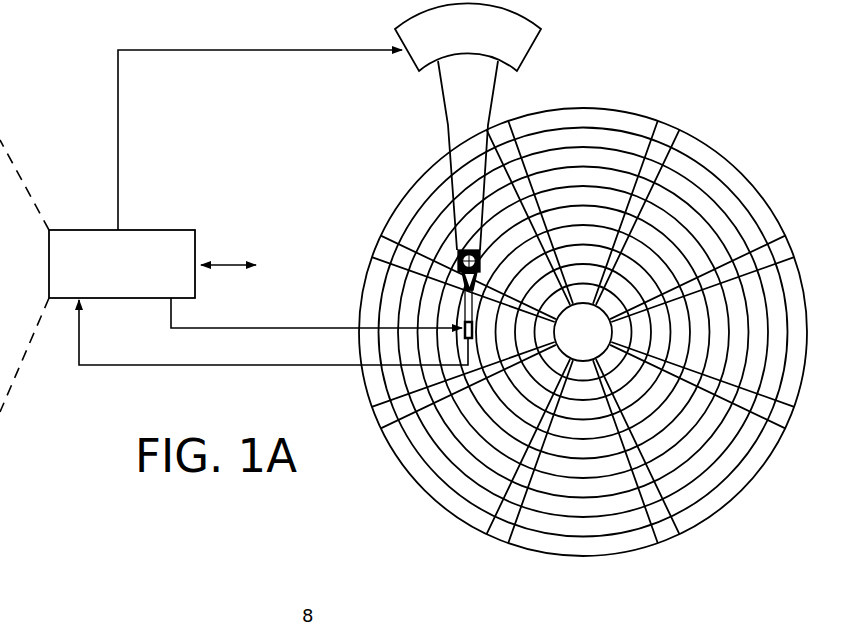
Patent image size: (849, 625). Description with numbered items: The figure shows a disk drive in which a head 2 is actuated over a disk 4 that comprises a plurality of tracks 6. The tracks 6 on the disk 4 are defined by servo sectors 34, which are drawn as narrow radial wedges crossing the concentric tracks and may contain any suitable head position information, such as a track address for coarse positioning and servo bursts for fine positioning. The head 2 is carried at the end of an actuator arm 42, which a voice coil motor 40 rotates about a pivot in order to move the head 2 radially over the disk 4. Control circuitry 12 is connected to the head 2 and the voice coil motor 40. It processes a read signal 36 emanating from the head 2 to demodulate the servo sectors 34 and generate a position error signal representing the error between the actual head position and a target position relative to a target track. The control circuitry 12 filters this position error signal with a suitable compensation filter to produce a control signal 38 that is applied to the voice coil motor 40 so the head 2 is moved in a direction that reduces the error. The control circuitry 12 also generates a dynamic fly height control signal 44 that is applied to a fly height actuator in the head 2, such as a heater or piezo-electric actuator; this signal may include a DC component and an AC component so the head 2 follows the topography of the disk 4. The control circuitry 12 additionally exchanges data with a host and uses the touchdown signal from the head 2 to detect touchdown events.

The head 2 is at (461, 339).
The disk 4 is at (741, 161).
The tracks 6 is at (584, 140).
The control circuitry 12 is at (170, 230).
The servo sectors 34 is at (594, 338).
The read signal 36 is at (258, 367).
The control signal 38 is at (118, 132).
The voice coil motor 40 is at (413, 69).
The actuator arm 42 is at (450, 140).
The dynamic fly height control signal 44 is at (302, 328).